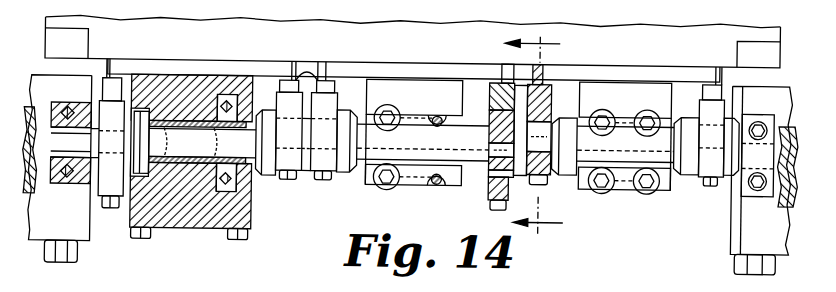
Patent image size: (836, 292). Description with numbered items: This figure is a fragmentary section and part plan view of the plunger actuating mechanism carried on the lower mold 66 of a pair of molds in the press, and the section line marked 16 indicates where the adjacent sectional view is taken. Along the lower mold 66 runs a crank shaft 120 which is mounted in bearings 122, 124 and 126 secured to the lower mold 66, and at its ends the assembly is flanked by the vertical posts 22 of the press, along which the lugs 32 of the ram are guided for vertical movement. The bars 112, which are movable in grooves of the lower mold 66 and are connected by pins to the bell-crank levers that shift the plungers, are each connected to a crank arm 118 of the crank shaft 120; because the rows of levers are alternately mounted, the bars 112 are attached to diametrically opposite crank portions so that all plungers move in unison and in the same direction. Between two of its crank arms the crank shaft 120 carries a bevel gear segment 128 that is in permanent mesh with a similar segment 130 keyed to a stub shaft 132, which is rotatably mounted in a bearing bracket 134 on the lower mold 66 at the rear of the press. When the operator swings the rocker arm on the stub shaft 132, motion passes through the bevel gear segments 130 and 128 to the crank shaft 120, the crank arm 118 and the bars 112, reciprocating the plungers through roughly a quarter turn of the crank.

The lower mold 66 is at (55, 25).
The posts 22 is at (36, 116).
The lugs 32 is at (82, 232).
The bearing 122 is at (53, 181).
The bevel gear segment 128 is at (235, 77).
The bevel gear segment 130 is at (172, 226).
The bearing bracket 134 is at (215, 225).
The stub shaft 132 is at (202, 142).
The bars 112 is at (300, 66).
The crank shaft 120 is at (358, 166).
The bearing 124 is at (408, 172).
The crank arm 118 is at (490, 184).
The section line 16 is at (539, 137).
The bearing 126 is at (748, 187).